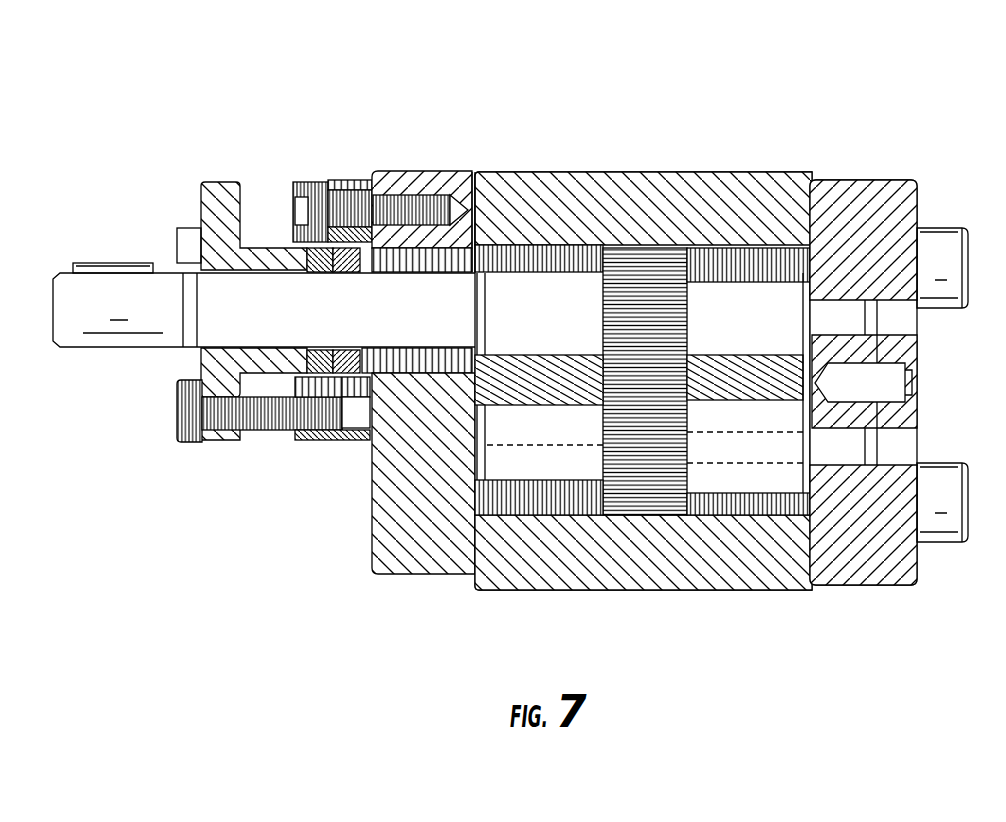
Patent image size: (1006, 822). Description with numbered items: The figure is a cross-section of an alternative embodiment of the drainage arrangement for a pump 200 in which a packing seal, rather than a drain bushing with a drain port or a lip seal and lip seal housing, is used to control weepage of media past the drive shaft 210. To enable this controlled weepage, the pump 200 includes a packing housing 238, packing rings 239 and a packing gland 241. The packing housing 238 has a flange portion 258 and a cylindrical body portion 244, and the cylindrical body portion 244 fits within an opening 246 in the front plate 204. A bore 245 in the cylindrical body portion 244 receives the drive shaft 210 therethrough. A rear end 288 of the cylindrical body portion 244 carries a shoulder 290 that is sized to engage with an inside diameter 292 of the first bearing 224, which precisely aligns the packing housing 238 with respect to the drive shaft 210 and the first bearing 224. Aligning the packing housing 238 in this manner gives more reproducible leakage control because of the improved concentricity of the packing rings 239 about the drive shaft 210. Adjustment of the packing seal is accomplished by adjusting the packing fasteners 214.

The pump 200 is at (792, 64).
The front plate 204 is at (397, 170).
The drive shaft 210 is at (97, 328).
The packing fasteners 214 is at (177, 432).
The first bearing 224 is at (573, 500).
The packing housing 238 is at (350, 178).
The packing rings 239 is at (345, 378).
The packing gland 241 is at (222, 180).
The cylindrical body portion 244 is at (418, 260).
The bore 245 is at (445, 373).
The opening 246 is at (414, 373).
The flange portion 258 is at (315, 443).
The rear end 288 is at (462, 255).
The shoulder 290 is at (490, 270).
The inside diameter 292 is at (570, 287).